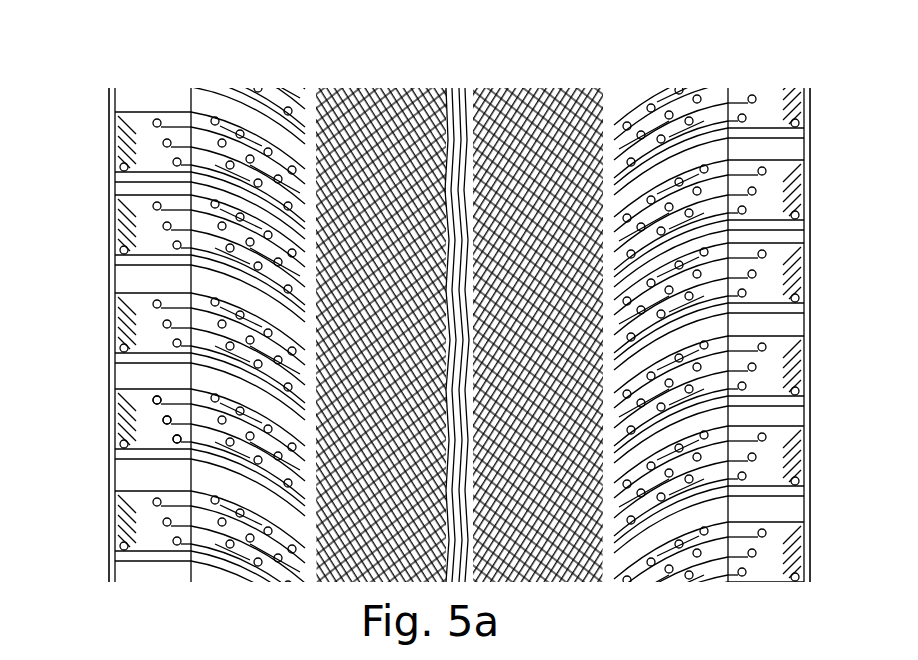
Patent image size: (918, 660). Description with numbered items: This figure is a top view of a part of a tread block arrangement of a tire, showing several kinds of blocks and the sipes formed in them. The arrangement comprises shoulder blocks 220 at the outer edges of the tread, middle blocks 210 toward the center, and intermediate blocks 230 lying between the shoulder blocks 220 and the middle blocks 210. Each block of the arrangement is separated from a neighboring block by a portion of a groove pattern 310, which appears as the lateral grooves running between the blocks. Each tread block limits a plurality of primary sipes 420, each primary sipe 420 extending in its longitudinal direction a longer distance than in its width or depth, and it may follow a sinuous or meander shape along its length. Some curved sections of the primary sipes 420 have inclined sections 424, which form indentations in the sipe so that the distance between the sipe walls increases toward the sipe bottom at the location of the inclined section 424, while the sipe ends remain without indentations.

The middle block 210 is at (456, 106).
The shoulder block 220 is at (251, 80).
The intermediate block 230 is at (354, 106).
The groove pattern 310 is at (146, 270).
The primary sipe 420 is at (146, 398).
The inclined section 424 is at (300, 432).